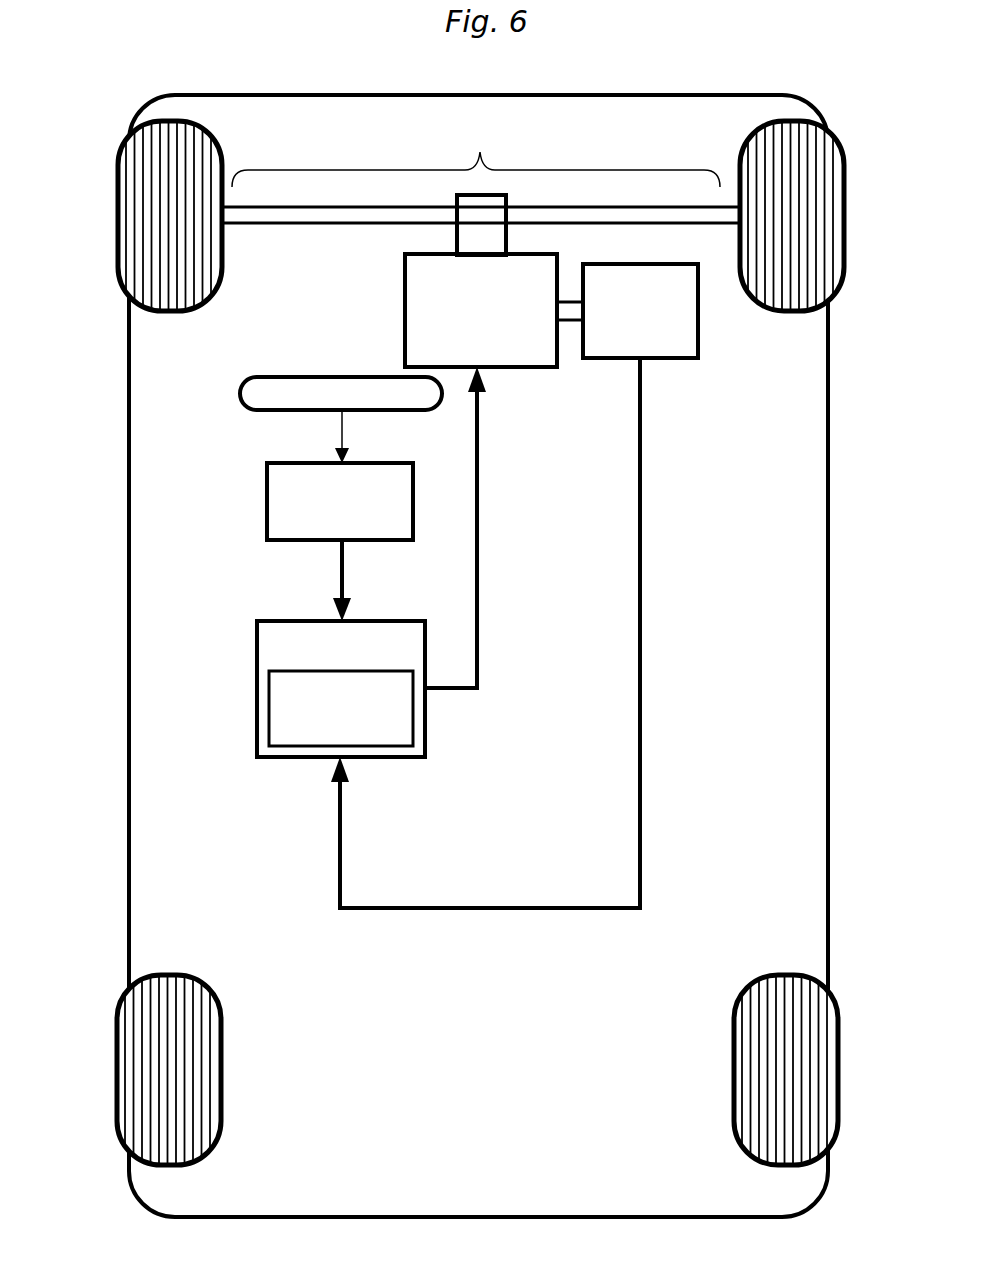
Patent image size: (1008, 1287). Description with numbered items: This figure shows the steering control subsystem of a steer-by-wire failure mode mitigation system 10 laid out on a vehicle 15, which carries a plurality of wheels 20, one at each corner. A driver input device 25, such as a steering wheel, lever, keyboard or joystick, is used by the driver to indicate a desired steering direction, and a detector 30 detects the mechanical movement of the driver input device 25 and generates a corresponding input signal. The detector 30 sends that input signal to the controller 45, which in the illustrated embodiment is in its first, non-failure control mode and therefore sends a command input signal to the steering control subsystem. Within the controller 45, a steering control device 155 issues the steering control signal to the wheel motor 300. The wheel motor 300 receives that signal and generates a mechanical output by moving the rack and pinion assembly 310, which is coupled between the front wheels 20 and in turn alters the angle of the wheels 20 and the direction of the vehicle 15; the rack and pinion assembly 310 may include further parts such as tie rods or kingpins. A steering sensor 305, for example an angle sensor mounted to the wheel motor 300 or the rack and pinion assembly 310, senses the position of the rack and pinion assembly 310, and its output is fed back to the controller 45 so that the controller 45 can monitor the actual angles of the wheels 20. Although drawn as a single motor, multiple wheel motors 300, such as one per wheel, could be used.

The steer-by-wire failure mode mitigation system 10 is at (678, 61).
The vehicle 15 is at (829, 610).
The wheels 20 is at (120, 208).
The driver input device 25 is at (323, 377).
The detector 30 is at (267, 497).
The controller 45 is at (297, 621).
The steering control device 155 is at (269, 708).
The wheel motor 300 is at (513, 370).
The steering sensor 305 is at (687, 360).
The rack and pinion assembly 310 is at (480, 189).